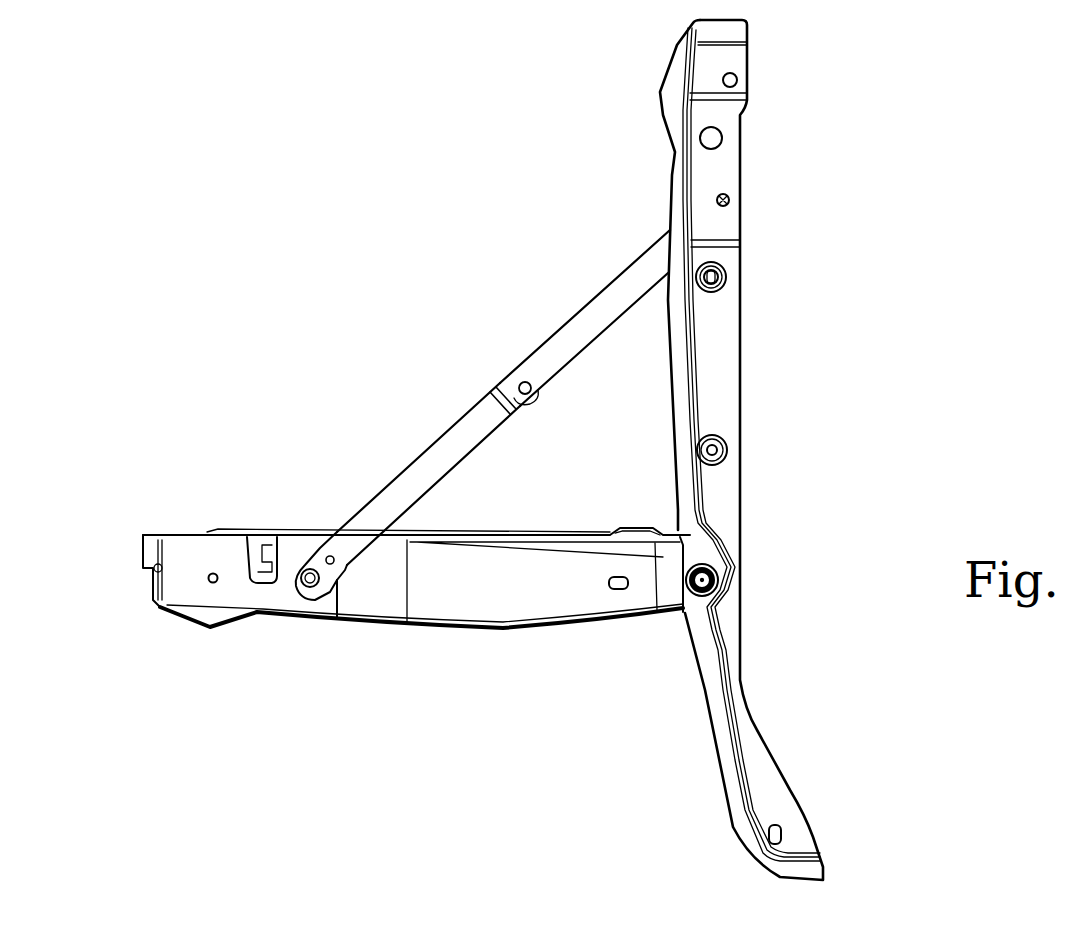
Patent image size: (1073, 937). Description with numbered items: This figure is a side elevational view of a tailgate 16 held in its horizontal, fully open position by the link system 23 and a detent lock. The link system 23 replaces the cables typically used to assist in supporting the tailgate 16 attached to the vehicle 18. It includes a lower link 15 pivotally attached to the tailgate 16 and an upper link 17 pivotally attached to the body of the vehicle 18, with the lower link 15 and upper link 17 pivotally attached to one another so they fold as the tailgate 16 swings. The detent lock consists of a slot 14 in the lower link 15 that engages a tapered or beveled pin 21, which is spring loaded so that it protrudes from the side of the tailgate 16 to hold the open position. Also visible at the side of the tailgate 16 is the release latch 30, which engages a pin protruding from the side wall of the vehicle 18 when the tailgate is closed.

The slot 14 is at (335, 535).
The lower link 15 is at (455, 455).
The tailgate 16 is at (482, 603).
The upper link 17 is at (572, 333).
The vehicle 18 is at (722, 350).
The tapered or beveled pin 21 is at (343, 570).
The link system 23 is at (482, 385).
The release latch 30 is at (265, 543).